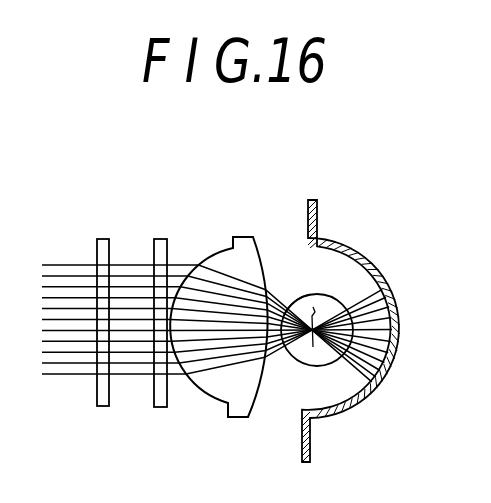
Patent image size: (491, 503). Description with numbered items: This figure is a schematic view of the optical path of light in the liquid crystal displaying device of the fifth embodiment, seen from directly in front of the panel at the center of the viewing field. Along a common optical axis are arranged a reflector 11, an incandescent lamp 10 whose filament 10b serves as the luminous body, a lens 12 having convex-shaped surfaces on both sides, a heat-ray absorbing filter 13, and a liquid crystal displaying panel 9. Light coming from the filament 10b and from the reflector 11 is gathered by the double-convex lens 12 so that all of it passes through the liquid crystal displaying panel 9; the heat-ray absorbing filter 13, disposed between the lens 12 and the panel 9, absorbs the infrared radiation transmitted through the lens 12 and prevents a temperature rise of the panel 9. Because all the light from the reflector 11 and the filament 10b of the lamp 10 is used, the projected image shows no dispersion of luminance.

The liquid crystal displaying panel 9 is at (102, 246).
The heat-ray absorbing filter 13 is at (158, 246).
The lens 12 is at (238, 237).
The incandescent lamp 10 is at (294, 300).
The filament 10b is at (308, 297).
The reflector 11 is at (317, 212).